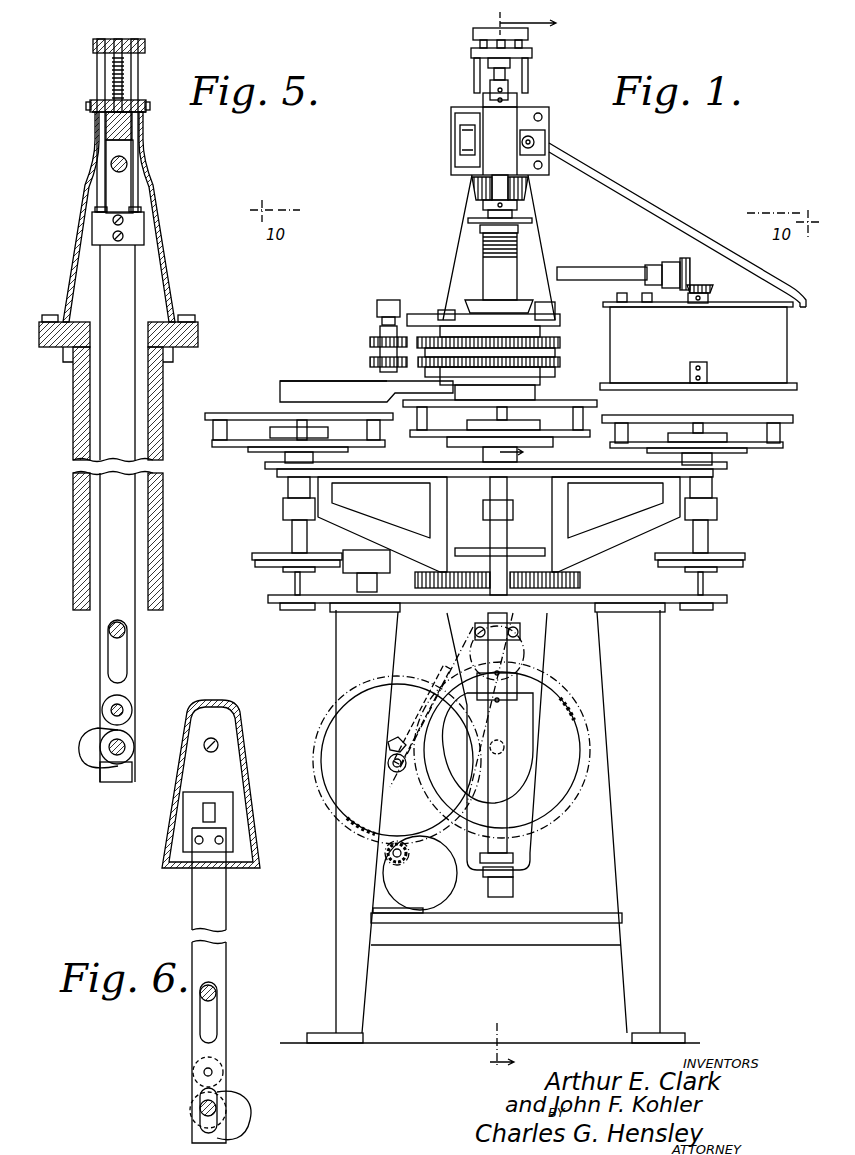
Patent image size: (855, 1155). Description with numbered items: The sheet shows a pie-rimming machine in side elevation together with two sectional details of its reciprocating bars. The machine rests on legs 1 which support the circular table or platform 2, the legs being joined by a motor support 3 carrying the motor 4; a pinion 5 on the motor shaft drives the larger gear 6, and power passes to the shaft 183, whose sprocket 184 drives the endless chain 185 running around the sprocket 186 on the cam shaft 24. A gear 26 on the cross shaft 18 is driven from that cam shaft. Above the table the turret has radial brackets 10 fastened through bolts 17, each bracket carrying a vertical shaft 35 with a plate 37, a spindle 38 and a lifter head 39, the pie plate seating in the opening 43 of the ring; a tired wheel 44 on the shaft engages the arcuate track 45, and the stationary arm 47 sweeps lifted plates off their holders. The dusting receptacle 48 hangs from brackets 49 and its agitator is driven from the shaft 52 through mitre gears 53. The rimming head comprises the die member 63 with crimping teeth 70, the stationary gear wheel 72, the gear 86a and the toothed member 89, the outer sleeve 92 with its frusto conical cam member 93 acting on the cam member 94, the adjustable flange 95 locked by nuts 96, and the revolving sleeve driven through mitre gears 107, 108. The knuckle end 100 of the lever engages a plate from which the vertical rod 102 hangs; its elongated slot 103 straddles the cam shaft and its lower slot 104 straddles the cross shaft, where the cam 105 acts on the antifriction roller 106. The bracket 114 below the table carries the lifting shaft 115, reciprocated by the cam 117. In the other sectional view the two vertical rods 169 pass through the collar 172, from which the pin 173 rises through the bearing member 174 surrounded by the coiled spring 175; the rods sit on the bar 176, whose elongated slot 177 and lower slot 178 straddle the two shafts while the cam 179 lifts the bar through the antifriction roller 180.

In FIG. 1, the legs 1 is at (490, 823).
In FIG. 1, the table or platform 2 is at (727, 603).
In FIG. 1, the motor support 3 is at (481, 955).
In FIG. 1, the motor 4 is at (420, 873).
In FIG. 1, the pinion 5 is at (410, 856).
In FIG. 1, the gear 6 is at (310, 761).
In FIG. 1, the radial frames or brackets 10 is at (612, 530).
In FIG. 1, the bolts 17 is at (455, 572).
In FIG. 5, the cross shaft 18 is at (128, 744).
In FIG. 6, the cross shaft 18 is at (200, 1110).
In FIG. 5, the cam shaft 24 is at (125, 630).
In FIG. 6, the cam shaft 24 is at (216, 992).
In FIG. 1, the gear 26 is at (592, 745).
In FIG. 1, the vertical shafts 35 is at (292, 532).
In FIG. 1, the plate 37 is at (220, 448).
In FIG. 1, the spindle 38 is at (294, 585).
In FIG. 1, the head or plate 39 is at (285, 428).
In FIG. 1, the opening 43 is at (222, 414).
In FIG. 1, the wheel 44 is at (255, 558).
In FIG. 1, the track 45 is at (366, 571).
In FIG. 1, the stationary arm 47 is at (302, 390).
In FIG. 1, the receptacle 48 is at (698, 341).
In FIG. 1, the brackets 49 is at (688, 216).
In FIG. 1, the shaft 52 is at (600, 264).
In FIG. 1, the mitre gears 53 is at (690, 280).
In FIG. 1, the die member 63 is at (445, 372).
In FIG. 1, the teeth 70 is at (470, 368).
In FIG. 1, the gear wheel 72 is at (417, 338).
In FIG. 1, the gear 86a is at (372, 340).
In FIG. 1, the toothed member 89 is at (370, 362).
In FIG. 1, the outer sleeve 92 is at (500, 266).
In FIG. 1, the cam member 93 is at (470, 300).
In FIG. 1, the cam member 94 is at (540, 302).
In FIG. 1, the flange or ring 95 is at (532, 221).
In FIG. 1, the lock nuts 96 is at (518, 230).
In FIG. 6, the knuckle end 100 is at (209, 803).
In FIG. 6, the vertical rod 102 is at (228, 960).
In FIG. 6, the elongated slot 103 is at (211, 1030).
In FIG. 6, the elongated slot 104 is at (222, 1095).
In FIG. 6, the cam 105 is at (246, 1119).
In FIG. 6, the antifriction roller 106 is at (195, 1070).
In FIG. 1, the mitre gear 107 is at (470, 200).
In FIG. 1, the mitre gear 108 is at (474, 185).
In FIG. 1, the bracket 114 is at (540, 660).
In FIG. 1, the shaft 115 is at (513, 890).
In FIG. 1, the cam 117 is at (520, 757).
In FIG. 5, the vertical rods 169 is at (143, 192).
In FIG. 1, the vertical rods 169 is at (528, 85).
In FIG. 5, the collar 172 is at (149, 103).
In FIG. 5, the pin 173 is at (120, 38).
In FIG. 5, the bearing member 174 is at (146, 44).
In FIG. 1, the bearing member 174 is at (532, 53).
In FIG. 5, the coiled spring 175 is at (124, 78).
In FIG. 5, the bar 176 is at (113, 513).
In FIG. 5, the elongated slot 177 is at (121, 665).
In FIG. 5, the lower slot 178 is at (117, 783).
In FIG. 5, the cam 179 is at (86, 762).
In FIG. 5, the antifriction roller 180 is at (102, 711).
In FIG. 1, the shaft 183 is at (398, 766).
In FIG. 1, the sprocket 184 is at (390, 742).
In FIG. 1, the endless chain 185 is at (437, 673).
In FIG. 1, the sprocket 186 is at (518, 632).